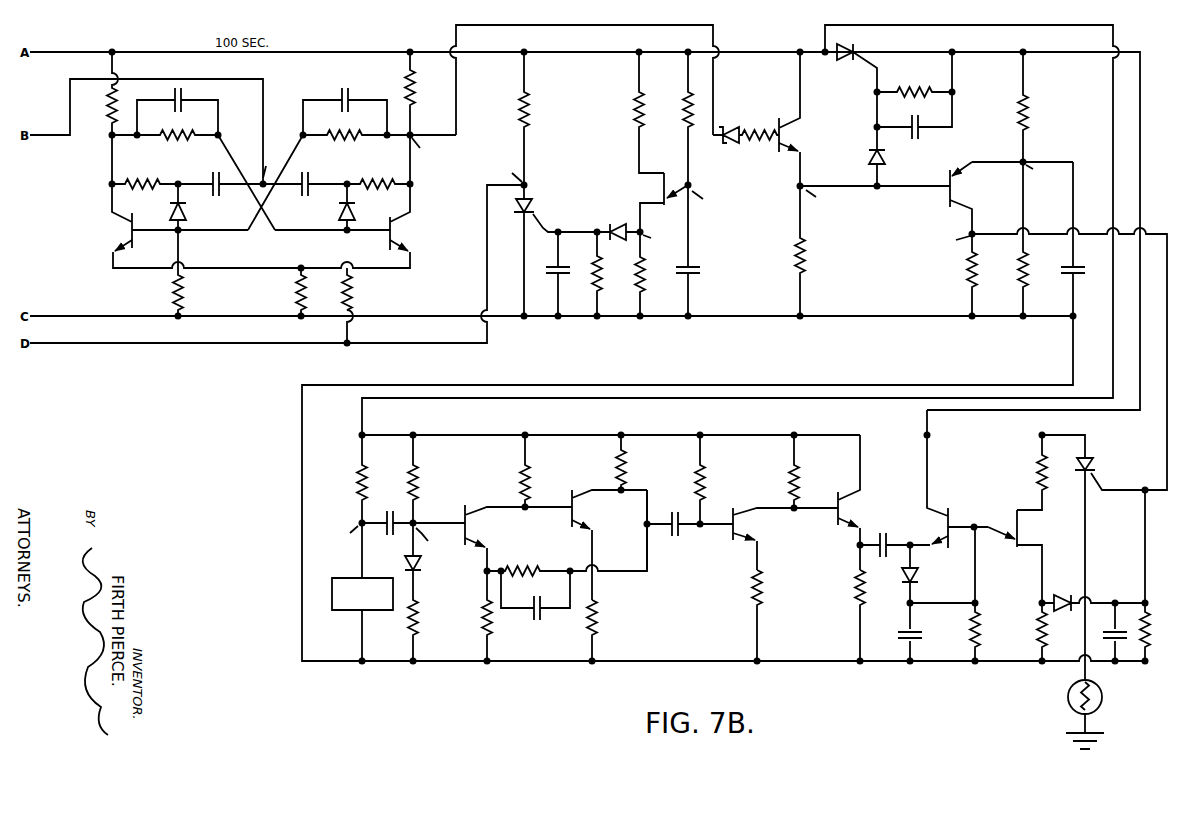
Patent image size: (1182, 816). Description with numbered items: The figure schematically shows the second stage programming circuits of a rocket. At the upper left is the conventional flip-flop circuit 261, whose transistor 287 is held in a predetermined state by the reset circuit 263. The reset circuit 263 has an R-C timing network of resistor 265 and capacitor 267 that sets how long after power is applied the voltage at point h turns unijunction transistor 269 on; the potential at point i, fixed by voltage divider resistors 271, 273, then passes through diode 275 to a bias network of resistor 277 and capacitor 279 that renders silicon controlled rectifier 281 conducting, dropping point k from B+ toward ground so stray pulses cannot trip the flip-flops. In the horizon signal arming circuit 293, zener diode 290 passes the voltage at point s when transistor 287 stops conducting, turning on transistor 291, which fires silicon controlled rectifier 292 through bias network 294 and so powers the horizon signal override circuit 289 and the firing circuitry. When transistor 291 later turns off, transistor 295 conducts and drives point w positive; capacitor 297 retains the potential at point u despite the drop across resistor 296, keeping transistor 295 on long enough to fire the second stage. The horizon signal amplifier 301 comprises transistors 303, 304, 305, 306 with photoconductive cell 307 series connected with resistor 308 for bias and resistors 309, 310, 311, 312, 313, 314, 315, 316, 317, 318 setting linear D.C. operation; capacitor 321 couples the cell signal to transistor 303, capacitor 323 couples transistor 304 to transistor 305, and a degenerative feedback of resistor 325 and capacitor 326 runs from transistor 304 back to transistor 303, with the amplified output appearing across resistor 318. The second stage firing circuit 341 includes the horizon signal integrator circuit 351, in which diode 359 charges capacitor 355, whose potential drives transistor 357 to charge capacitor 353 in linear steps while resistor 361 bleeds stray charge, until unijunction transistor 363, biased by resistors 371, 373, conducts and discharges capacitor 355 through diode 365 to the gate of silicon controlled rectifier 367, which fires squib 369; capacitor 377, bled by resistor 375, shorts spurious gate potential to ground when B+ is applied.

The flip-flop circuit 261 is at (286, 229).
The reset circuit 263 is at (590, 212).
The resistor 265 is at (682, 90).
The capacitor 267 is at (698, 268).
The unijunction transistor 269 is at (662, 175).
The voltage divider resistor 271 is at (660, 274).
The voltage divider resistor 273 is at (635, 103).
The diode 275 is at (620, 210).
The resistor 277 is at (602, 320).
The capacitor 279 is at (548, 268).
The silicon controlled rectifier 281 is at (535, 208).
The transistor 287 is at (403, 233).
The horizon signal override circuit 289 is at (960, 209).
The zener diode 290 is at (715, 152).
The transistor 291 is at (790, 139).
The silicon controlled rectifier 292 is at (858, 48).
The horizon signal arming circuit 293 is at (832, 194).
The bias network 294 is at (860, 101).
The transistor 295 is at (947, 201).
The resistor 296 is at (1028, 106).
The capacitor 297 is at (1068, 275).
The horizon signal amplifier 301 is at (587, 577).
The transistor 303 is at (483, 498).
The transistor 304 is at (570, 511).
The transistor 305 is at (734, 514).
The transistor 306 is at (837, 516).
The photoconductive cell 307 is at (348, 609).
The resistor 308 is at (359, 465).
The resistor 309 is at (418, 483).
The resistor 310 is at (416, 606).
The resistor 311 is at (485, 622).
The resistor 312 is at (531, 483).
The resistor 313 is at (596, 615).
The resistor 314 is at (627, 466).
The resistor 315 is at (708, 466).
The resistor 316 is at (760, 590).
The resistor 317 is at (799, 466).
The resistor 318 is at (857, 618).
The capacitor 321 is at (383, 515).
The capacitor 323 is at (673, 538).
The resistor 325 is at (530, 560).
The capacitor 326 is at (541, 620).
The second stage firing circuit 341 is at (1019, 579).
The horizon signal integrator circuit 351 is at (944, 503).
The capacitor 353 is at (884, 530).
The capacitor 355 is at (918, 635).
The transistor 357 is at (946, 528).
The diode 359 is at (916, 586).
The resistor 361 is at (978, 622).
The unijunction transistor 363 is at (1023, 529).
The diode 365 is at (1066, 598).
The silicon controlled rectifier 367 is at (1090, 462).
The squib 369 is at (1068, 705).
The resistor 371 is at (1040, 626).
The resistor 373 is at (1036, 488).
The resistor 375 is at (1150, 651).
The capacitor 377 is at (1118, 626).